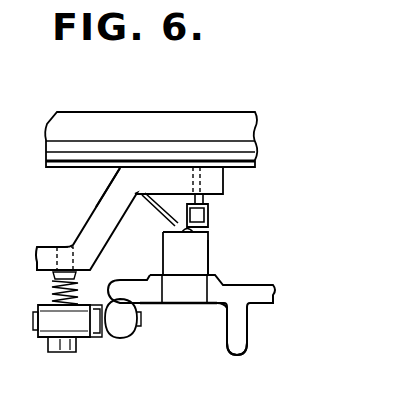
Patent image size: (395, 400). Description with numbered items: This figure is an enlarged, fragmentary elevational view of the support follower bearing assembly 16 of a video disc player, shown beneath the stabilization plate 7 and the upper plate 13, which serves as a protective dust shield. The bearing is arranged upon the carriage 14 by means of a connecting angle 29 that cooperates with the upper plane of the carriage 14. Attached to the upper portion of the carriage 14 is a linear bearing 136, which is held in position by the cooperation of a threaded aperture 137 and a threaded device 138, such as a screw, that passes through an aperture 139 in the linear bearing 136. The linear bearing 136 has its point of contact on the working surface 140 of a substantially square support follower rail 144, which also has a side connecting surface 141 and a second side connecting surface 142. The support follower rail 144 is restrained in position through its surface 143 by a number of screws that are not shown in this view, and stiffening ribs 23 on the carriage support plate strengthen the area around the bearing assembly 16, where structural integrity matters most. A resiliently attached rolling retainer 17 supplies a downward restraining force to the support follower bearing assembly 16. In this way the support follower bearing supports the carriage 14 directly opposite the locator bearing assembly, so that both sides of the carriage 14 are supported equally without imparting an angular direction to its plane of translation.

The stabilization plate 7 is at (154, 119).
The upper plate 13 is at (257, 161).
The carriage 14 is at (100, 217).
The support follower bearing assembly 16 is at (182, 332).
The resiliently attached rolling retainer 17 is at (56, 358).
The stiffening ribs 23 is at (248, 353).
The connecting angle 29 is at (112, 181).
The linear bearing 136 is at (172, 189).
The threaded aperture 137 is at (203, 182).
The threaded device 138 is at (210, 221).
The aperture 139 is at (208, 204).
The working surface 140 is at (204, 234).
The side connecting surface 141 is at (209, 259).
The second side connecting surface 142 is at (162, 256).
The surface 143 is at (217, 304).
The support follower rail 144 is at (188, 264).